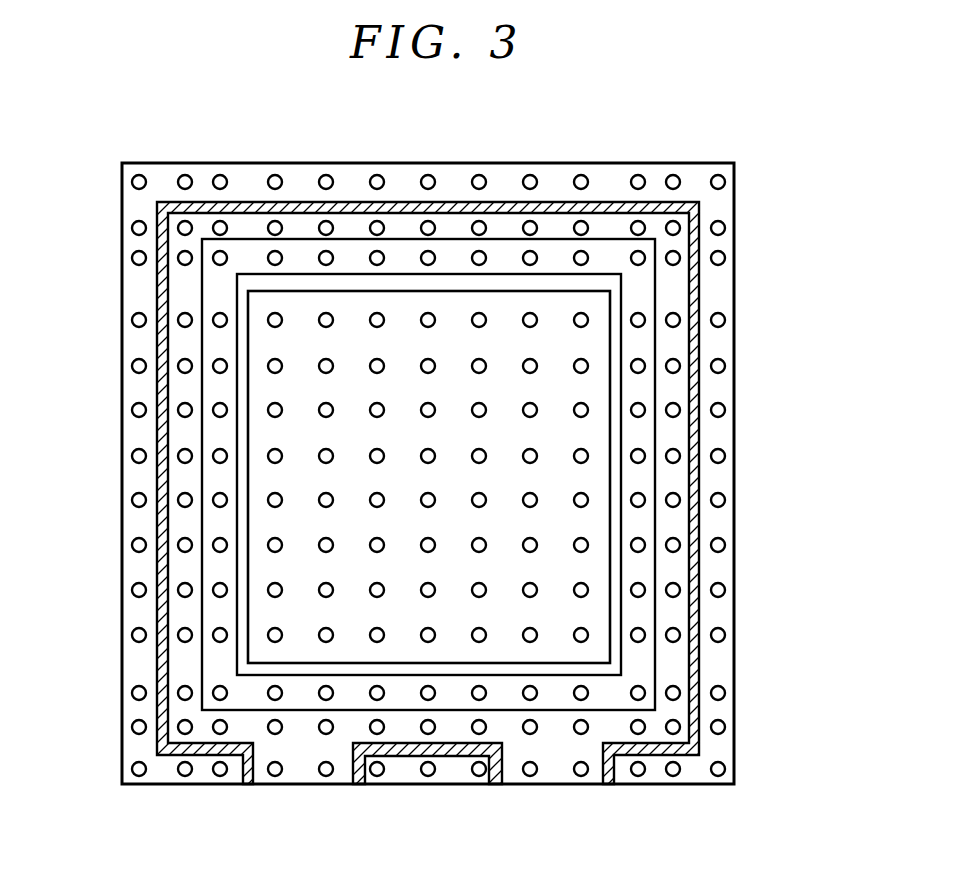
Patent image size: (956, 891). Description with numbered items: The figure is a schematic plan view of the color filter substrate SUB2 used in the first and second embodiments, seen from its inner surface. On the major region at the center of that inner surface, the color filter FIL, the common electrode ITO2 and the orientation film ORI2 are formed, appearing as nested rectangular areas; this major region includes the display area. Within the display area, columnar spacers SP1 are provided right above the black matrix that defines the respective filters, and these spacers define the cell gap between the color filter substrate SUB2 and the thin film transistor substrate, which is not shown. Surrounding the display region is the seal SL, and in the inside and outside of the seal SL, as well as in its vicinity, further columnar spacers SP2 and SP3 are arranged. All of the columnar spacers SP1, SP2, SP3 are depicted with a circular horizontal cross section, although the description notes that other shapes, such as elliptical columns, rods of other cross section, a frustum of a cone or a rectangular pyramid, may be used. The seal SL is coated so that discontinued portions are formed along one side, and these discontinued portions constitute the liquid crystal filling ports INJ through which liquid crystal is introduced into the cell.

The color filter substrate SUB2 is at (512, 160).
The seal SL is at (300, 202).
The orientation film ORI2 is at (399, 239).
The common electrode ITO2 is at (255, 274).
The color filter FIL is at (596, 291).
The columnar spacers SP1 is at (589, 499).
The columnar spacers SP2 is at (674, 583).
The columnar spacers SP3 is at (725, 594).
The liquid crystal filling ports INJ is at (552, 794).